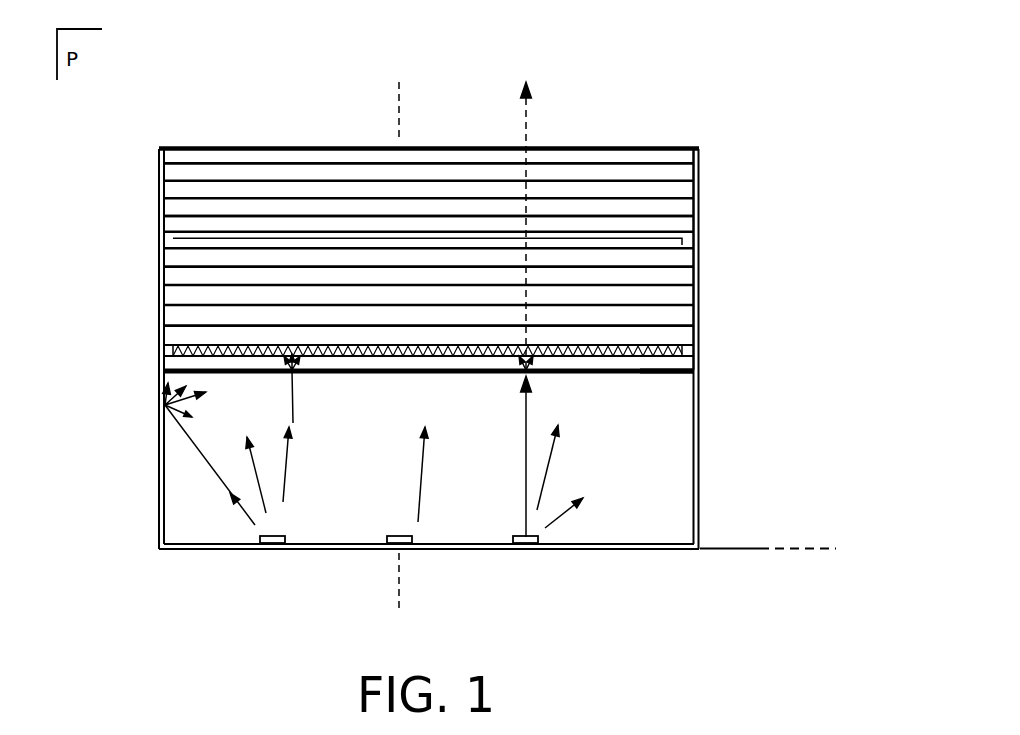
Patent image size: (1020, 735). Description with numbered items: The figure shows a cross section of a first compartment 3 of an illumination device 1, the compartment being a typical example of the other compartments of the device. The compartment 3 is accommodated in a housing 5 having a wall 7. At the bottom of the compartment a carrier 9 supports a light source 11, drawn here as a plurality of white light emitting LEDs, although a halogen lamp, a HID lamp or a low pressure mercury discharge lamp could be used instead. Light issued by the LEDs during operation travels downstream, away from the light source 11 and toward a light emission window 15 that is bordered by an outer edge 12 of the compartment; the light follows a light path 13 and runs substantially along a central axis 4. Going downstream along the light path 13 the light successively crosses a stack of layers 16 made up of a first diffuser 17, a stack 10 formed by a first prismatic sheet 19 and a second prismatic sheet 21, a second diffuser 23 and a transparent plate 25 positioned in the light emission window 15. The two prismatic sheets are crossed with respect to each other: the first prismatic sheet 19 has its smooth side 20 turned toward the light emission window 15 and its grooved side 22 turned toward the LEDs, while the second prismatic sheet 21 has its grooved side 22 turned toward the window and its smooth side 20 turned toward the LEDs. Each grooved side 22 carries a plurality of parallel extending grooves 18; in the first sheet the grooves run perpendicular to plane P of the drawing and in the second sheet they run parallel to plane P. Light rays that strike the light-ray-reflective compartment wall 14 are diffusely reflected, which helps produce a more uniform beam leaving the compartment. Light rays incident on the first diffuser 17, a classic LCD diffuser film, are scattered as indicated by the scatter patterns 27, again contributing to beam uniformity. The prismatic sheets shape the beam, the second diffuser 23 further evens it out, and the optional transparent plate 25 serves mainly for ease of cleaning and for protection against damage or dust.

The illumination device 1 is at (742, 74).
The first compartment 3 is at (613, 522).
The central axis 4 is at (399, 119).
The housing 5 is at (158, 446).
The wall 7 is at (733, 556).
The carrier 9 is at (216, 537).
The stack 10 is at (66, 252).
The light source 11 is at (268, 546).
The outer edge 12 is at (163, 146).
The light path 13 is at (526, 119).
The light-ray-reflective compartment wall 14 is at (158, 493).
The light emission window 15 is at (254, 146).
The stack of layers 16 is at (806, 148).
The first diffuser 17 is at (468, 376).
The grooves 18 is at (655, 358).
The first prismatic sheet 19 is at (704, 307).
The smooth side 20 is at (178, 304).
The second prismatic sheet 21 is at (704, 238).
The grooved side 22 is at (173, 239).
The second diffuser 23 is at (704, 200).
The transparent plate 25 is at (704, 148).
The scatter patterns 27 is at (310, 364).